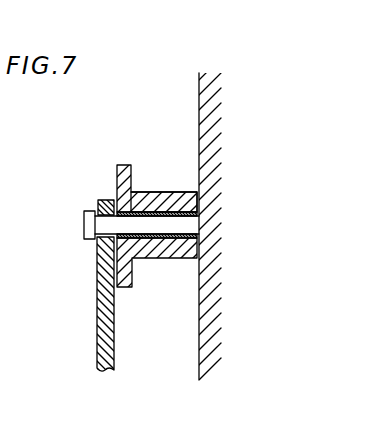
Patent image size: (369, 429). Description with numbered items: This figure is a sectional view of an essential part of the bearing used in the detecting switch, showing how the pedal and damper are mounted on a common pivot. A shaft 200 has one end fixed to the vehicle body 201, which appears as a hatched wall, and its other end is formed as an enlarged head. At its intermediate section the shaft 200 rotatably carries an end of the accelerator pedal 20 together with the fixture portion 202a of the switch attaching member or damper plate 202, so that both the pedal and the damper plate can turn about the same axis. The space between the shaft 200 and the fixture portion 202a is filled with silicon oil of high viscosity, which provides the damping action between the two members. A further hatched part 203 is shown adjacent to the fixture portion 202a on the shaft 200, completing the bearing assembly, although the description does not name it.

The accelerator pedal 20 is at (98, 305).
The shaft 200 is at (84, 225).
The vehicle body 201 is at (270, 219).
The damper plate 202 is at (118, 164).
The fixture portion 202a is at (168, 192).
The lower bracket 203 is at (160, 257).